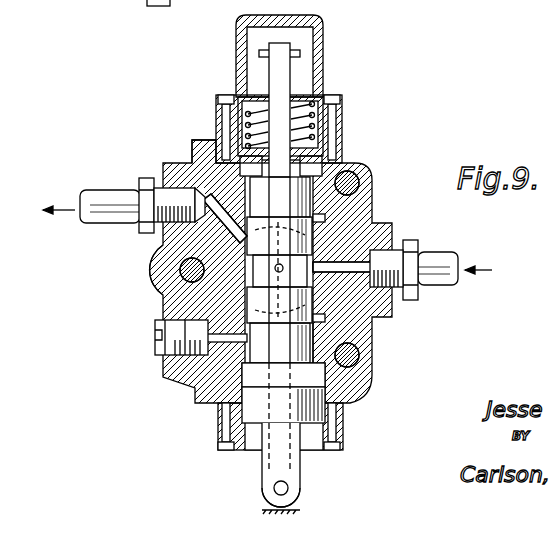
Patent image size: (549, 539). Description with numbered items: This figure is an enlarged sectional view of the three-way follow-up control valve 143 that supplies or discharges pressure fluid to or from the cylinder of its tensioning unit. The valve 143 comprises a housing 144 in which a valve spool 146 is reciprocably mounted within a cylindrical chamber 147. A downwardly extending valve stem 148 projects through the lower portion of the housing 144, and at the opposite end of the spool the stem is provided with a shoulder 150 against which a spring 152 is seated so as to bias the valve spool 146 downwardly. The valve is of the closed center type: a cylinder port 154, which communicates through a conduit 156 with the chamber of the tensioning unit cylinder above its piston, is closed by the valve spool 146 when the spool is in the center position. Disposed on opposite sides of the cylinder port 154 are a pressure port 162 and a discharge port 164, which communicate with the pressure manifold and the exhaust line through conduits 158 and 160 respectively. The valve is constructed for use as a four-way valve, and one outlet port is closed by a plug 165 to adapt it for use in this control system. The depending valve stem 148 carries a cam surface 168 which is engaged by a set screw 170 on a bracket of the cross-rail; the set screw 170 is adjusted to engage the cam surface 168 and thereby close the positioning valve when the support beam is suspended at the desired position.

The three-way directional control valve 143 is at (203, 408).
The housing 144 is at (163, 298).
The valve spool 146 is at (243, 251).
The cylindrical chamber 147 is at (318, 330).
The valve stem 148 is at (270, 457).
The shoulder 150 is at (262, 187).
The spring 152 is at (317, 127).
The cylinder port 154 is at (190, 167).
The conduit 156 is at (108, 198).
The conduit 158 is at (437, 258).
The conduit 160 is at (318, 252).
The pressure port 162 is at (390, 246).
The discharge port 164 is at (327, 215).
The plug 165 is at (157, 326).
The cam surface 168 is at (296, 506).
The set screw 170 is at (272, 506).